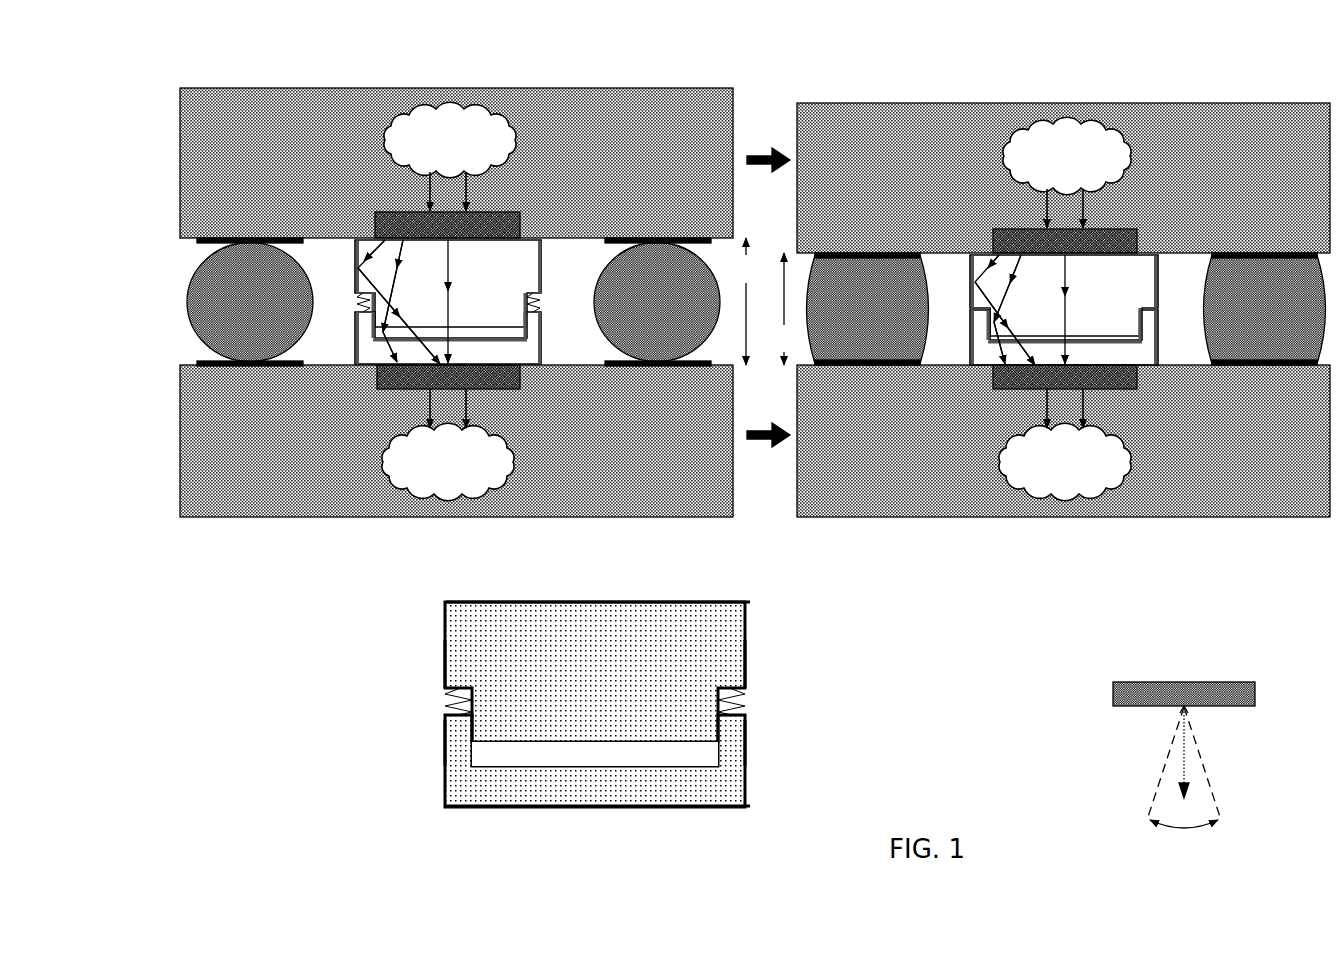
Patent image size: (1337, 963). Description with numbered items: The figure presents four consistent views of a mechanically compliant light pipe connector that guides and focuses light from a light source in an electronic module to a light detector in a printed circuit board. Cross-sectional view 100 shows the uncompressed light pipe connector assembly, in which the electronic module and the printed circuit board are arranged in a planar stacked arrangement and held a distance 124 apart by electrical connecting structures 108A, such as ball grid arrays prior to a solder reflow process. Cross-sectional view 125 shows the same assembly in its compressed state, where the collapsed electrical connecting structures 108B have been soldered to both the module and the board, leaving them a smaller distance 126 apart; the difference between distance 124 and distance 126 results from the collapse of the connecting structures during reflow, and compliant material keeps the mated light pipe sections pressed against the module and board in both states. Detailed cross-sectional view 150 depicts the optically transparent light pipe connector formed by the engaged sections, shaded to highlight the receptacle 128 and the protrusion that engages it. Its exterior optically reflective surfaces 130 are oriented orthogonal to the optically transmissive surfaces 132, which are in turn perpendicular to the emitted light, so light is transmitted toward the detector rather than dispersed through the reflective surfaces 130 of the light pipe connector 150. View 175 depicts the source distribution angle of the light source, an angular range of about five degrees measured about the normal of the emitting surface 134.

The cross-sectional view 100 is at (398, 72).
The electrical connecting structures 108A is at (453, 302).
The electrical connecting structures 108B is at (1066, 309).
The distance 124 is at (747, 301).
The cross-sectional view 125 is at (941, 72).
The distance 126 is at (787, 309).
The receptacle 128 is at (662, 755).
The optically reflective surfaces 130 is at (460, 688).
The optically transmissive surfaces 132 is at (453, 602).
The emitting surface 134 is at (1240, 707).
The detailed cross-sectional view 150 is at (333, 690).
The view 175 is at (1065, 680).